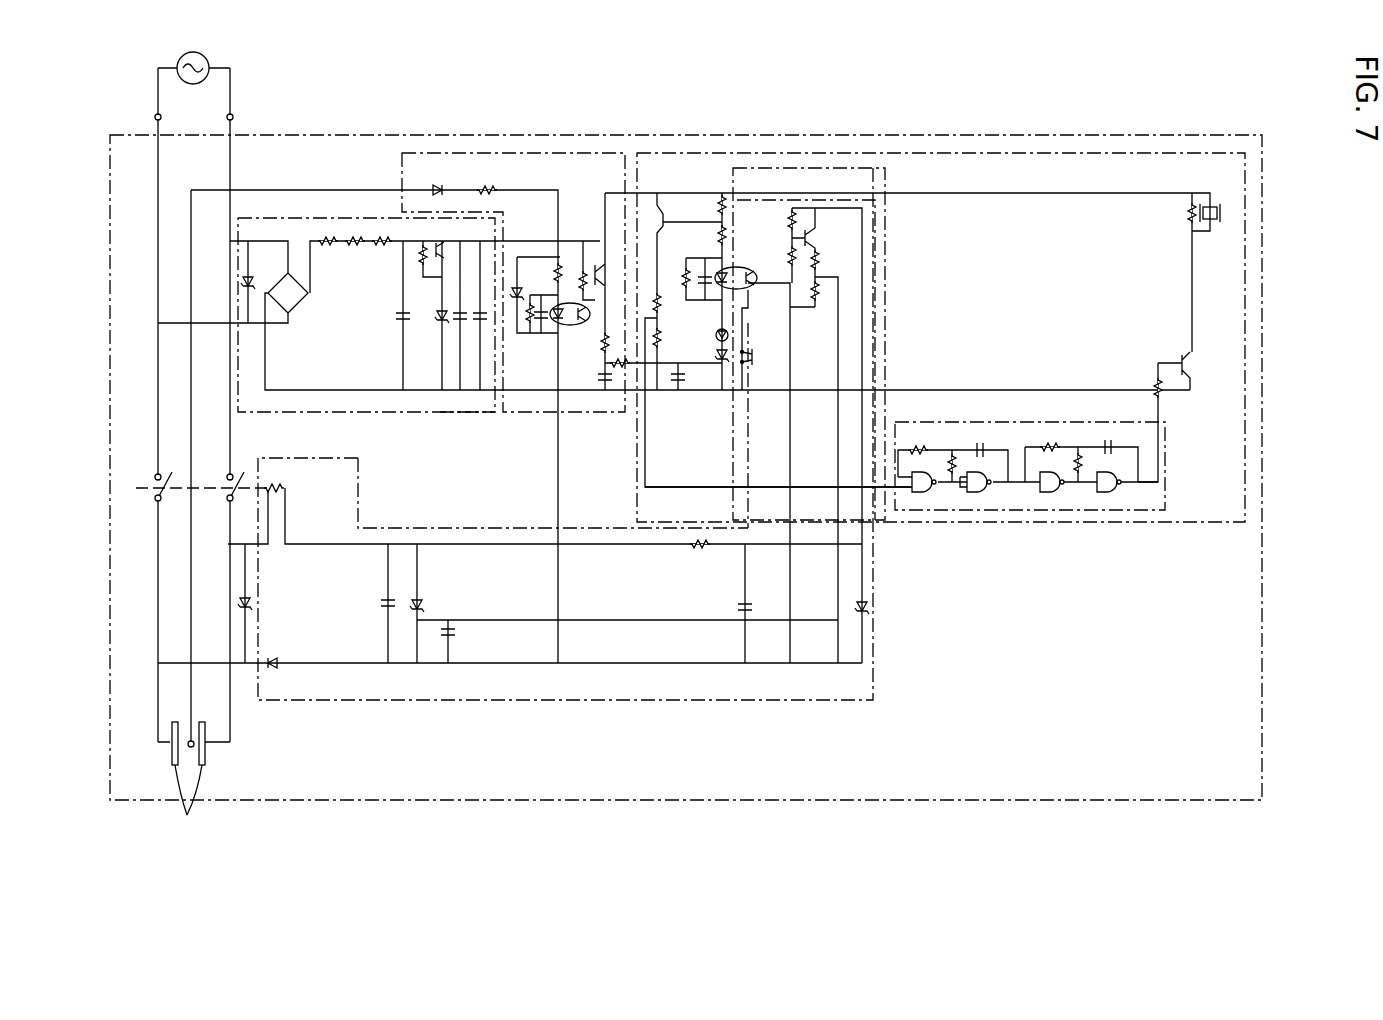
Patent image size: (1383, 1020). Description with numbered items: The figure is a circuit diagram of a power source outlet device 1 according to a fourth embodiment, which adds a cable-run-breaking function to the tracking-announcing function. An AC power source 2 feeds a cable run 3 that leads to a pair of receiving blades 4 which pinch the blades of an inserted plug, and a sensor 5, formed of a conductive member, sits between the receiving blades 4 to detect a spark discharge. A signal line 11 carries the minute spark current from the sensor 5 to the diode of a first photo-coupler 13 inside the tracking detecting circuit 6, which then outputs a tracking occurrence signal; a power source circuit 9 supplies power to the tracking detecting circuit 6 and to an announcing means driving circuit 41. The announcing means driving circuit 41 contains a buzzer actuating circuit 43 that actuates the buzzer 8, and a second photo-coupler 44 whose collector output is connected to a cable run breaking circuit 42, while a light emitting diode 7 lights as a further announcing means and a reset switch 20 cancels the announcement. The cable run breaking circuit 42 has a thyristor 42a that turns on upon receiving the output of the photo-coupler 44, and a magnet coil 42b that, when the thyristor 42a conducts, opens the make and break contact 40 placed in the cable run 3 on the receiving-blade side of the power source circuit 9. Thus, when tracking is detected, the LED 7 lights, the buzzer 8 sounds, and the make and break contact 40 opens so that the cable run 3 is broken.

The power source outlet device 1 is at (940, 135).
The AC power source 2 is at (178, 57).
The cable run 3 is at (158, 185).
The receiving blades 4 is at (190, 820).
The sensor 5 is at (195, 746).
The tracking detecting circuit 6 is at (458, 153).
The light emitting diode 7 is at (715, 337).
The buzzer 8 is at (1222, 212).
The power source circuit 9 is at (470, 415).
The signal line 11 is at (310, 190).
The photo-coupler 13 is at (575, 300).
The reset switch 20 is at (755, 357).
The make and break contact 40 is at (136, 488).
The announcing means driving circuit 41 is at (1108, 153).
The cable run breaking circuit 42 is at (545, 700).
The thyristor 42a is at (425, 600).
The magnet coil 42b is at (330, 490).
The buzzer actuating circuit 43 is at (1165, 465).
The photo-coupler 44 is at (745, 268).